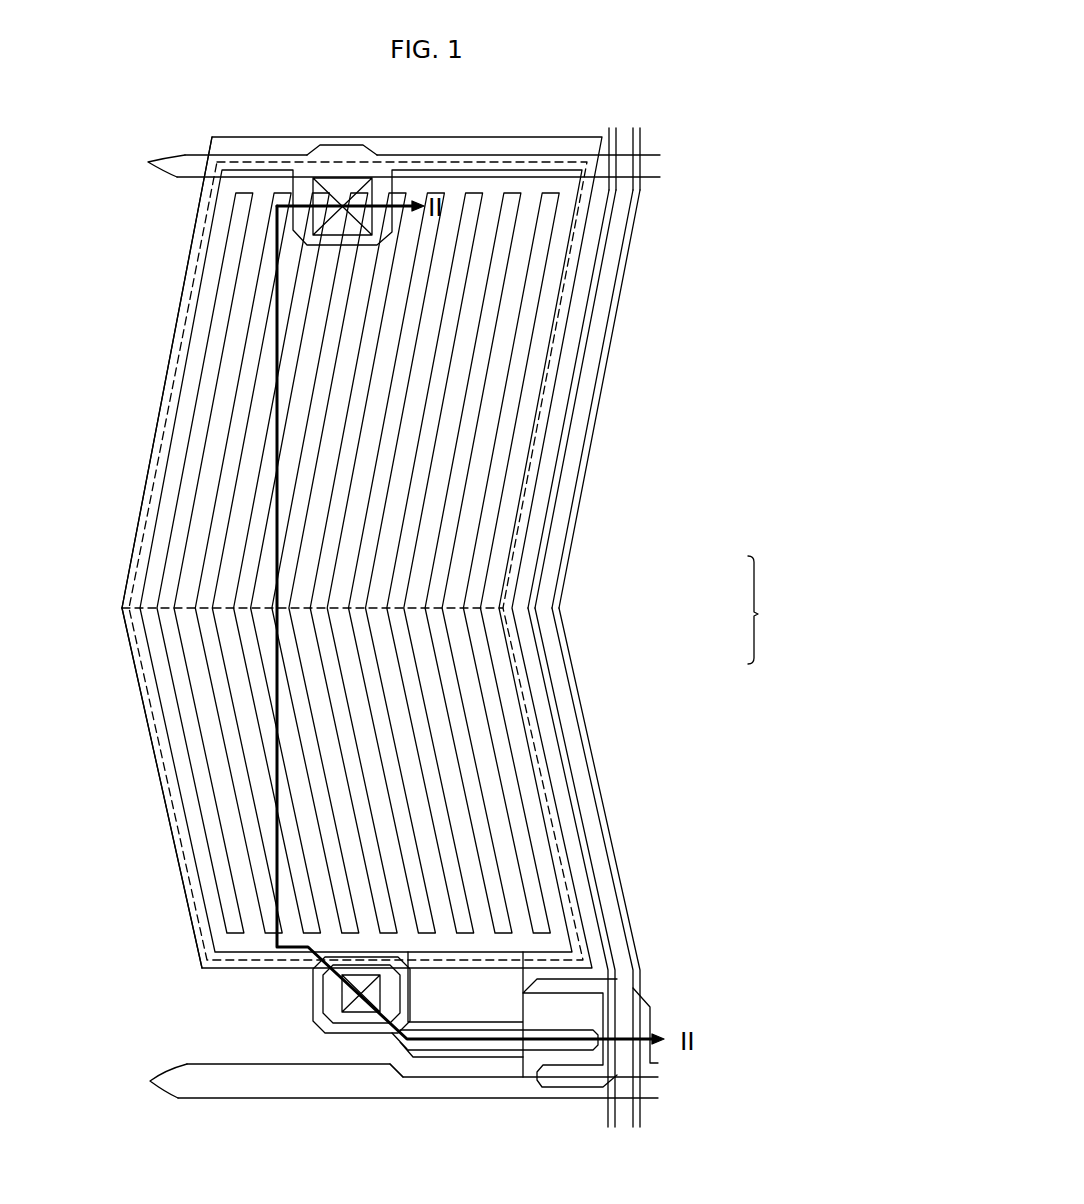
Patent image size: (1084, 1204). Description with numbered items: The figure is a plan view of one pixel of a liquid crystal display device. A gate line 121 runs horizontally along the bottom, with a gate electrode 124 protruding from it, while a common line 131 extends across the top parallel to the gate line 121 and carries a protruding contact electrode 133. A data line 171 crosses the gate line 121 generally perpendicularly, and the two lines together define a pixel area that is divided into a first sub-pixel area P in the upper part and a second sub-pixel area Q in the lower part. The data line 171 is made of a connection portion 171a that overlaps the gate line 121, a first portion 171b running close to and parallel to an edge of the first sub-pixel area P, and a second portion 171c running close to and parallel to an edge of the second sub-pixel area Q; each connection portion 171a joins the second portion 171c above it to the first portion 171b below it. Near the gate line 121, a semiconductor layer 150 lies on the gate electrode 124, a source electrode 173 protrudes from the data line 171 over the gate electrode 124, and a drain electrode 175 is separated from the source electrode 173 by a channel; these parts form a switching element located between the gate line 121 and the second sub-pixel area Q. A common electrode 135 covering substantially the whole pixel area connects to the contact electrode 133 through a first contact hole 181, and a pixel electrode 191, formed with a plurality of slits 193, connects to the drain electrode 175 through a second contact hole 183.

The gate line 121 is at (383, 1083).
The gate electrode 124 is at (497, 1068).
The common line 131 is at (384, 162).
The contact electrode 133 is at (393, 190).
The common electrode 135 is at (152, 468).
The semiconductor layer 150 is at (600, 1090).
The data line 171 is at (752, 610).
The connection portion 171a is at (633, 168).
The first portion 171b is at (597, 433).
The second portion 171c is at (605, 823).
The source electrode 173 is at (558, 1087).
The drain electrode 175 is at (430, 1050).
The first contact hole 181 is at (343, 178).
The second contact hole 183 is at (343, 995).
The pixel electrode 191 is at (205, 268).
The slits 193 is at (197, 384).
The first sub-pixel area P is at (135, 550).
The second sub-pixel area Q is at (150, 705).